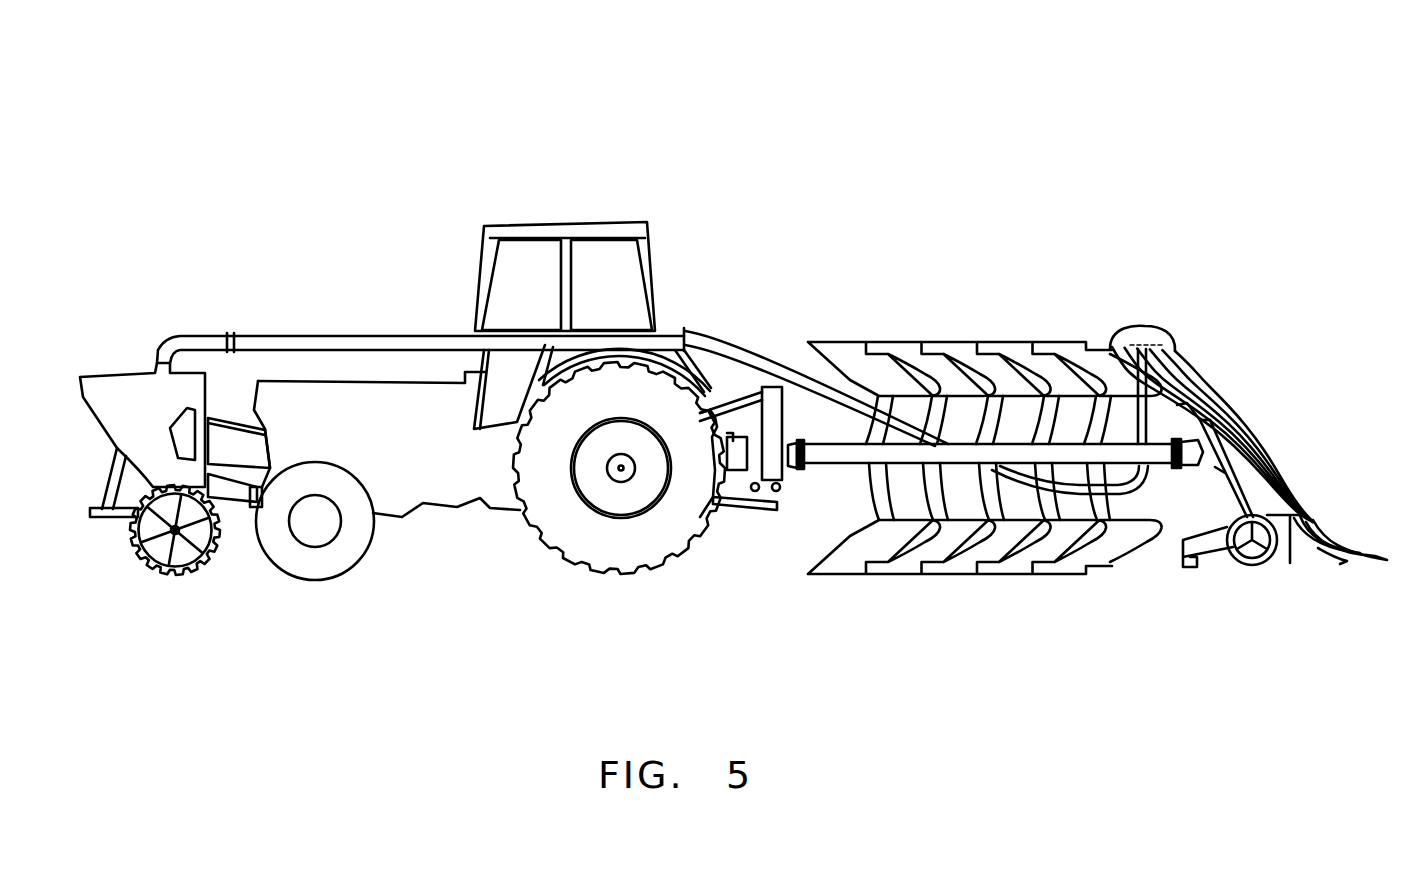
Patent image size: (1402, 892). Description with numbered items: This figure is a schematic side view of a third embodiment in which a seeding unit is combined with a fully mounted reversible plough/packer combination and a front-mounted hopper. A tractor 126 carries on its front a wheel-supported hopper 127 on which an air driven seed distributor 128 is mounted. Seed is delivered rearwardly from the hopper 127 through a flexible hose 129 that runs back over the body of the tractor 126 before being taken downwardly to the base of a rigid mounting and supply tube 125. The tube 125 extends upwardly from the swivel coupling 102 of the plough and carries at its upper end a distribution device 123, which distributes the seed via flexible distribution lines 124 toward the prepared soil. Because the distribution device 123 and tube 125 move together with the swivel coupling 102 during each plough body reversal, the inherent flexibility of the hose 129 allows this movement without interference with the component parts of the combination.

The swivel coupling 102 is at (1163, 470).
The distribution device 123 is at (1142, 334).
The flexible distribution lines 124 is at (1254, 420).
The mounting and supply tube 125 is at (1176, 386).
The tractor 126 is at (603, 216).
The hopper 127 is at (137, 398).
The air driven seed distributor 128 is at (188, 430).
The flexible hose 129 is at (377, 348).